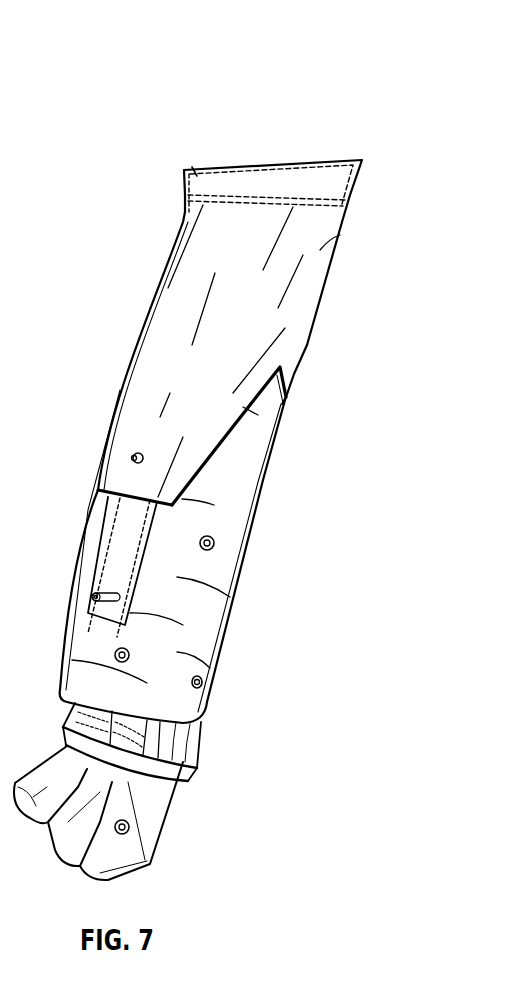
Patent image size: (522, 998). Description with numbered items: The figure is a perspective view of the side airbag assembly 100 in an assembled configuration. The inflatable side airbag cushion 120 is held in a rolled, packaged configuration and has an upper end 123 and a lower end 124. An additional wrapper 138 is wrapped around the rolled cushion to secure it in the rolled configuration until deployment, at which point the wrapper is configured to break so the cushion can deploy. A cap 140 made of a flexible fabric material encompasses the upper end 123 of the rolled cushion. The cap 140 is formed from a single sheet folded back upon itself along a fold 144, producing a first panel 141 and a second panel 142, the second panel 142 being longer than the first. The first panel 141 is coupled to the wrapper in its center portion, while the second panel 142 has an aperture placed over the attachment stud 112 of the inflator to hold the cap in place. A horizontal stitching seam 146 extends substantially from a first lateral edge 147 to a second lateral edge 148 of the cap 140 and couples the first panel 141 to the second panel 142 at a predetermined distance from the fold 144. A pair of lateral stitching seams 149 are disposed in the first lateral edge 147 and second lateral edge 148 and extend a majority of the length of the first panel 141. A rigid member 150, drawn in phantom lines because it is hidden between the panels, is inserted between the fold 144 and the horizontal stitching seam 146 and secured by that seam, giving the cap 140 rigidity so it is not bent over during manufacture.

The side airbag assembly 100 is at (220, 469).
The attachment stud 112 is at (79, 435).
The inflatable side airbag cushion 120 is at (148, 805).
The upper end 123 is at (262, 158).
The lower end 124 is at (123, 827).
The additional wrapper 138 is at (155, 769).
The cap 140 is at (239, 370).
The first panel 141 is at (275, 457).
The second panel 142 is at (218, 464).
The fold 144 is at (273, 160).
The horizontal stitching seam 146 is at (267, 153).
The first lateral edge 147 is at (143, 182).
The second lateral edge 148 is at (331, 302).
The lateral stitching seams 149 is at (241, 350).
The rigid member 150 is at (174, 135).